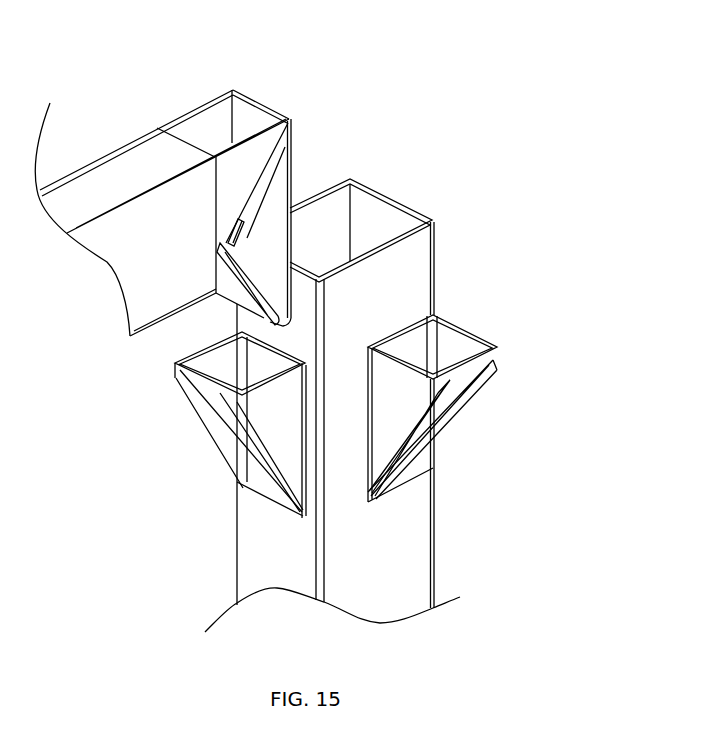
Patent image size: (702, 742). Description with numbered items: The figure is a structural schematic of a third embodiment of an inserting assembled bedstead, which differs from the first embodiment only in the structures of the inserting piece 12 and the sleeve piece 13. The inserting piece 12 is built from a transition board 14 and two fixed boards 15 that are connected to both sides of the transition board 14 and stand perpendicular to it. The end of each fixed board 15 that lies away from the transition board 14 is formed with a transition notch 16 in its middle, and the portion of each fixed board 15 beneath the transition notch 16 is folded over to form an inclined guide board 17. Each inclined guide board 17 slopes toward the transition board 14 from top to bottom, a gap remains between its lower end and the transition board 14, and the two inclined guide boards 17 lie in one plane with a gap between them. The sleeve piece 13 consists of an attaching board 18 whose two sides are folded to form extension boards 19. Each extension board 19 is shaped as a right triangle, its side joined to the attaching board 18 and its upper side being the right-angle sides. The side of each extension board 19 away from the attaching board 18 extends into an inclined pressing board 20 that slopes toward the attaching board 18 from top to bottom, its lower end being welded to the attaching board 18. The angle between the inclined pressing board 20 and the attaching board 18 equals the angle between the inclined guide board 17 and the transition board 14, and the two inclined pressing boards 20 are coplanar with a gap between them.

The inserting piece 12 is at (295, 92).
The sleeve piece 13 is at (490, 316).
The transition board 14 is at (252, 93).
The fixed board 15 is at (193, 103).
The transition notch 16 is at (290, 127).
The inclined guide board 17 is at (288, 174).
The attaching board 18 is at (408, 338).
The extension board 19 is at (447, 340).
The inclined pressing board 20 is at (463, 403).